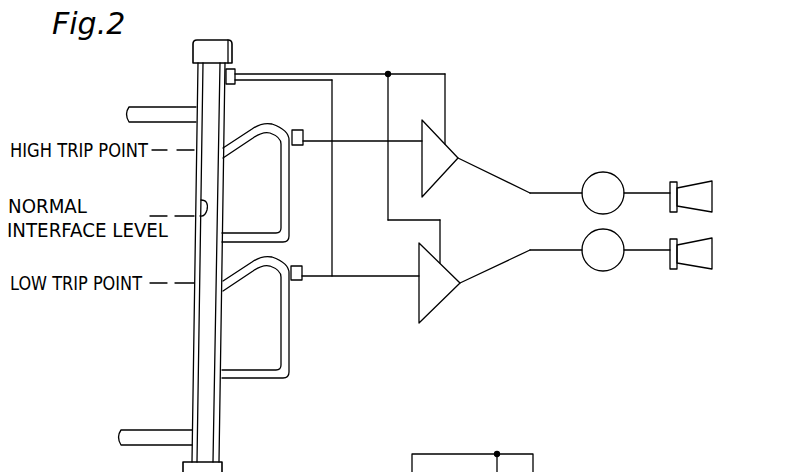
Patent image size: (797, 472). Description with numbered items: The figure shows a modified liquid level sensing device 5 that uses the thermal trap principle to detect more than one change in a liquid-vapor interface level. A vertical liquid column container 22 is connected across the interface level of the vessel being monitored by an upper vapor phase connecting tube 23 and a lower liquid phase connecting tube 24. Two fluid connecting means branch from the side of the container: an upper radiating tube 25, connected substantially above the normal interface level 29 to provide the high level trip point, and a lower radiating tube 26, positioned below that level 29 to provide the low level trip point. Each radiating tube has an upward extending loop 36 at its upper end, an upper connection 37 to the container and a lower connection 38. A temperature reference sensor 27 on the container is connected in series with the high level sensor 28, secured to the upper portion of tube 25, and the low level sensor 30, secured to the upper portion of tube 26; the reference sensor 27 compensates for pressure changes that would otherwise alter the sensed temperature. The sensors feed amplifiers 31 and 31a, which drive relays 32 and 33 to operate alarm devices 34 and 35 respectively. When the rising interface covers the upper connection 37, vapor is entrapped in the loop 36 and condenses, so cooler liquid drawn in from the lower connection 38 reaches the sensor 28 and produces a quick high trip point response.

The liquid level sensing device 5 is at (222, 56).
The liquid column container 22 is at (198, 167).
The upper vapor phase connecting tube 23 is at (172, 107).
The lower liquid phase connecting tube 24 is at (165, 430).
The upper radiating tube 25 is at (291, 187).
The lower radiating tube 26 is at (291, 331).
The temperature reference sensor 27 is at (235, 74).
The high level sensor 28 is at (298, 134).
The interface level 29 is at (201, 200).
The low level sensor 30 is at (297, 282).
The amplifier 31 is at (447, 292).
The amplifier 31a is at (448, 148).
The relay 32 is at (607, 173).
The relay 33 is at (598, 271).
The alarm device 34 is at (706, 182).
The alarm device 35 is at (695, 268).
The upward extending loop 36 is at (287, 102).
The upper connection 37 is at (222, 160).
The lower connection 38 is at (225, 233).